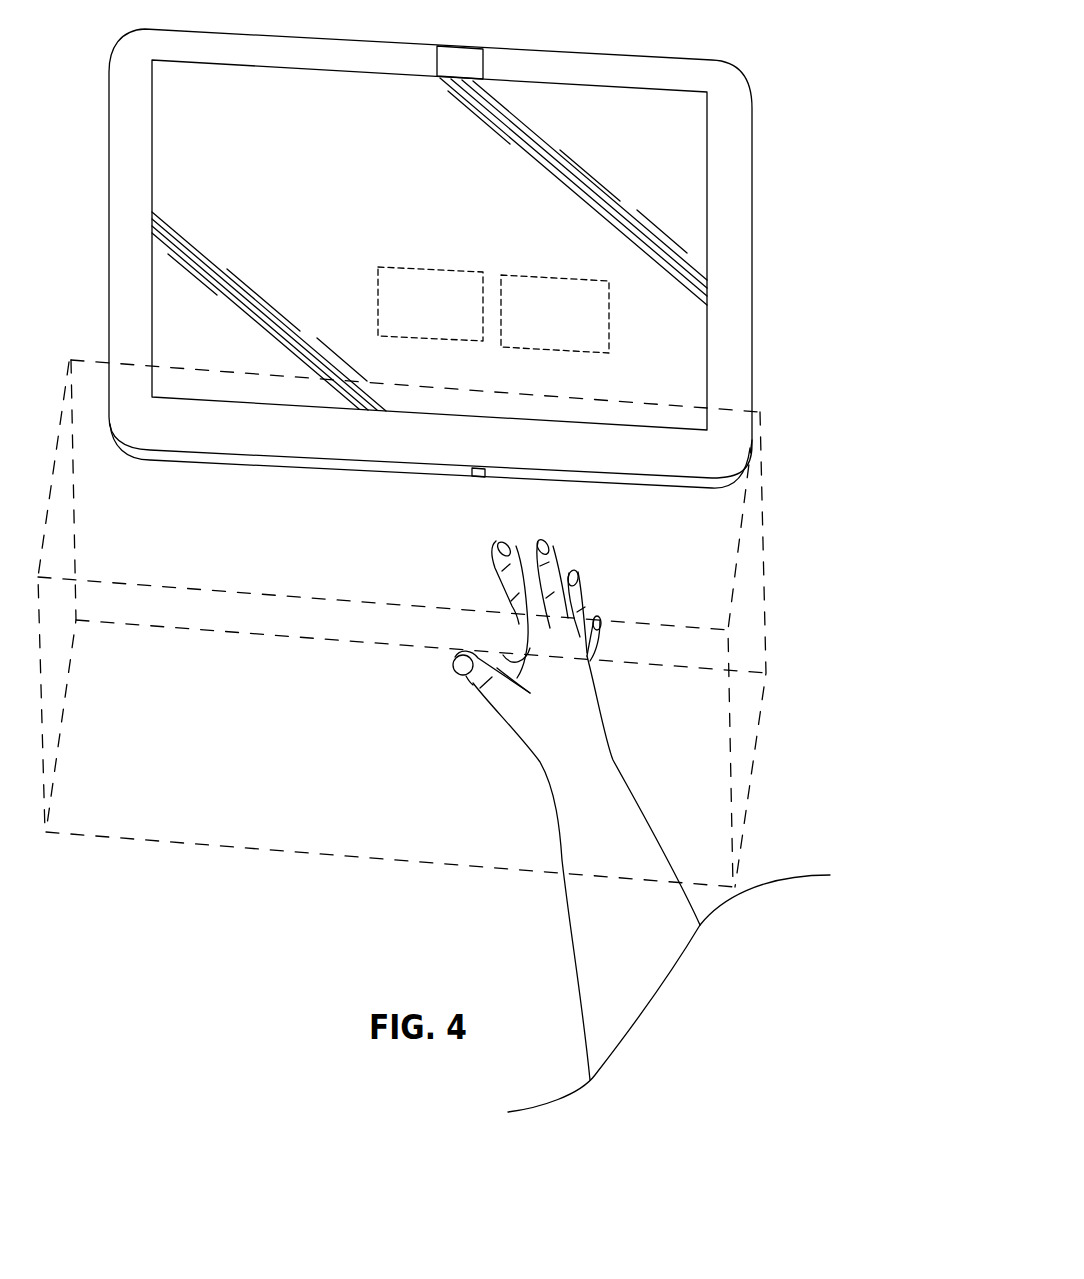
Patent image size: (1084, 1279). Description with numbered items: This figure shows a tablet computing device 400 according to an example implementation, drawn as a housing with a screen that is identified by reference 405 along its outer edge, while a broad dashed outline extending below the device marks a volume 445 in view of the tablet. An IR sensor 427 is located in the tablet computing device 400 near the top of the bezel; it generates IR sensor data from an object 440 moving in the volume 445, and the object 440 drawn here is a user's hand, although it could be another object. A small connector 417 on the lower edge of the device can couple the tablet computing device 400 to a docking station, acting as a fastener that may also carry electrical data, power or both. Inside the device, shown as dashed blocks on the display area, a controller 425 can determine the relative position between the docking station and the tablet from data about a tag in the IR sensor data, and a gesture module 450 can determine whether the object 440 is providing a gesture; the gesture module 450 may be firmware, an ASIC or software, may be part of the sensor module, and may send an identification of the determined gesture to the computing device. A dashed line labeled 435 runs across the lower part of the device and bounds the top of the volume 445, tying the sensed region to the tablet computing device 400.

The tablet computing device 400 is at (80, 140).
The computing device 405 is at (102, 233).
The IR sensor 427 is at (485, 62).
The controller 425 is at (431, 266).
The gesture module 450 is at (556, 274).
The virtual boundary line 435 is at (682, 372).
The connector 417 is at (475, 477).
The volume 445 is at (185, 846).
The object 440 is at (583, 975).